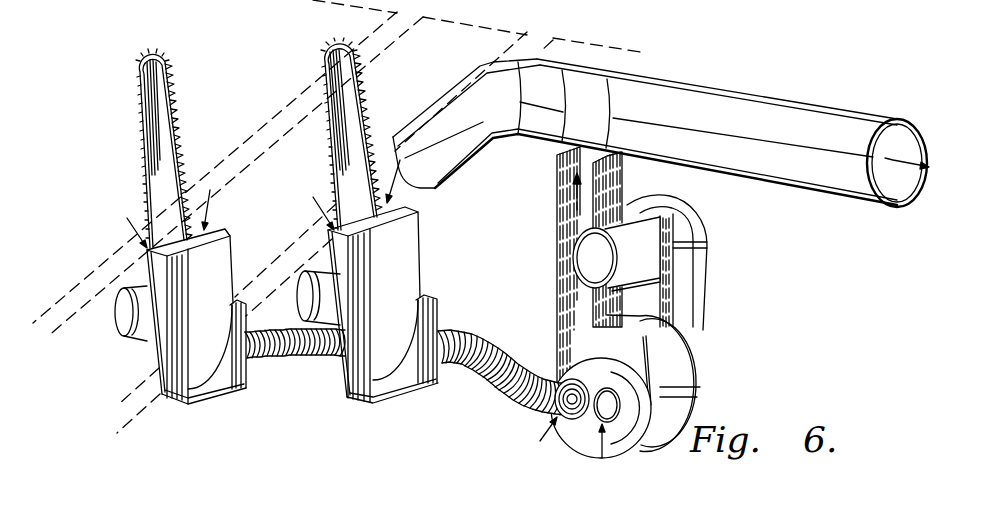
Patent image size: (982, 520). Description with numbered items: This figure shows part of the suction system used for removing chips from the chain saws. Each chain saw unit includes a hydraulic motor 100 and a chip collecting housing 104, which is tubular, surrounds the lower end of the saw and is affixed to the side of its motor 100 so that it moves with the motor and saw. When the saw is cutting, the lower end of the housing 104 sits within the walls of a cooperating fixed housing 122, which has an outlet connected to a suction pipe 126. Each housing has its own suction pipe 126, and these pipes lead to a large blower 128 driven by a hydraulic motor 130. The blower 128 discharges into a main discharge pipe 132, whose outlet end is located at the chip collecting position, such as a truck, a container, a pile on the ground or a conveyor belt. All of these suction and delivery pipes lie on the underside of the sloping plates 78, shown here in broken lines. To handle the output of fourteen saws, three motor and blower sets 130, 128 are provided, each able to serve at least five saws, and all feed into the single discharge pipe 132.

The sloping plates 78 is at (450, 37).
The hydraulic motor 100 is at (117, 315).
The chip collecting housing 104 is at (217, 247).
The fixed housing 122 is at (220, 384).
The suction pipe 126 is at (317, 370).
The blower 128 is at (687, 390).
The hydraulic motor 130 is at (645, 256).
The main discharge pipe 132 is at (793, 118).